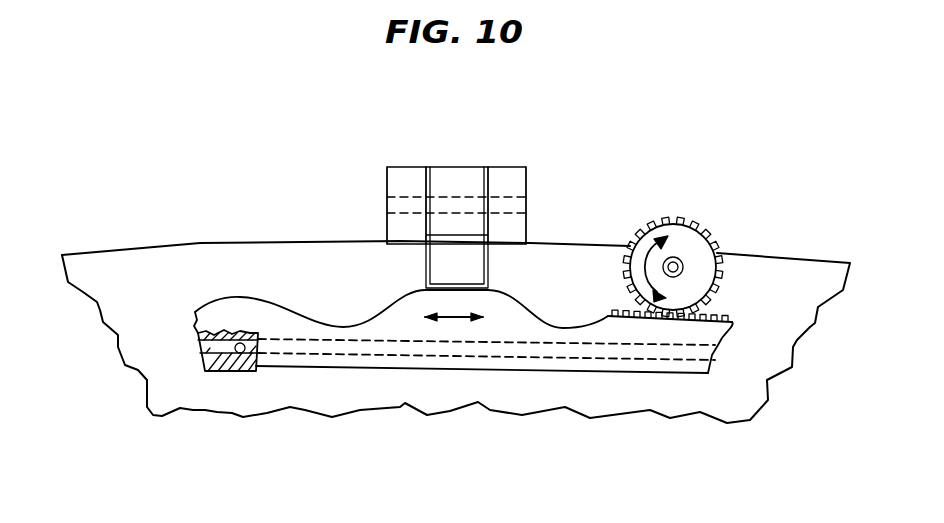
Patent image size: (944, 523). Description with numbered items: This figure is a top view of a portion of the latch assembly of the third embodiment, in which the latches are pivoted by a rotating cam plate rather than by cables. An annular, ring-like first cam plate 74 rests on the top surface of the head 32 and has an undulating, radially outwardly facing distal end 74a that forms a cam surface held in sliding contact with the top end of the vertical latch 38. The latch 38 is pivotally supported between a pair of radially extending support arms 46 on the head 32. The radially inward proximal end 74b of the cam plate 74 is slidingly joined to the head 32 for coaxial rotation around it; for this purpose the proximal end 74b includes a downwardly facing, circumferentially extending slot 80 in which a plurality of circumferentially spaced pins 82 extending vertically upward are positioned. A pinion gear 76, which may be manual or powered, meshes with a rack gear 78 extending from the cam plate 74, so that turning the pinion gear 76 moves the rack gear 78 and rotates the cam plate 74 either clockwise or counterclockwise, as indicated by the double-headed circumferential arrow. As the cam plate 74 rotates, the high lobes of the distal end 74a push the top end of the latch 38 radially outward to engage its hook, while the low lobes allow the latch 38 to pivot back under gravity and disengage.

The head 32 is at (790, 252).
The latch 38 is at (455, 167).
The support arms 46 is at (397, 167).
The first cam plate 74 is at (492, 358).
The distal end 74a is at (340, 322).
The proximal end 74b is at (300, 362).
The pinion gear 76 is at (693, 222).
The rack gear 78 is at (608, 313).
The slot 80 is at (208, 358).
The pins 82 is at (243, 333).